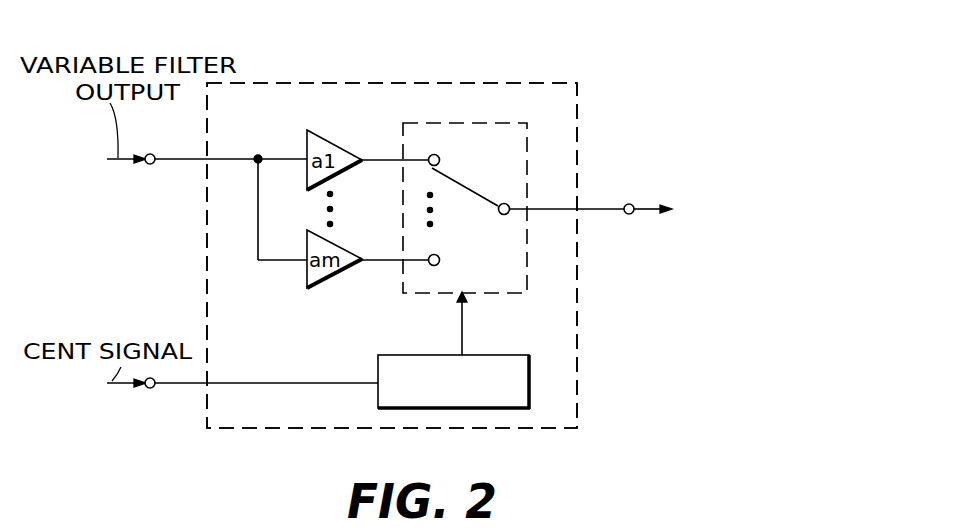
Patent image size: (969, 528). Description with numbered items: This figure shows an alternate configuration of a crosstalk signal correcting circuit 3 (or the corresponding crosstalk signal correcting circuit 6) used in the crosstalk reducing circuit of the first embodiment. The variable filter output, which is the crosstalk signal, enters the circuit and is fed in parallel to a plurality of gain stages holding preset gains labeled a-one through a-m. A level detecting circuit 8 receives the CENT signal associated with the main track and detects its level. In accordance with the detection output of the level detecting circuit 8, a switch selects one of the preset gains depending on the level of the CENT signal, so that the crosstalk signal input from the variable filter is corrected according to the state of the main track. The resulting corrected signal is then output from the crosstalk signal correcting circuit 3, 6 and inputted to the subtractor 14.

The crosstalk signal correcting circuit 3 is at (528, 82).
The crosstalk signal correcting circuit 6 is at (392, 255).
The level detecting circuit 8 is at (529, 372).
The subtractor 14 is at (643, 212).